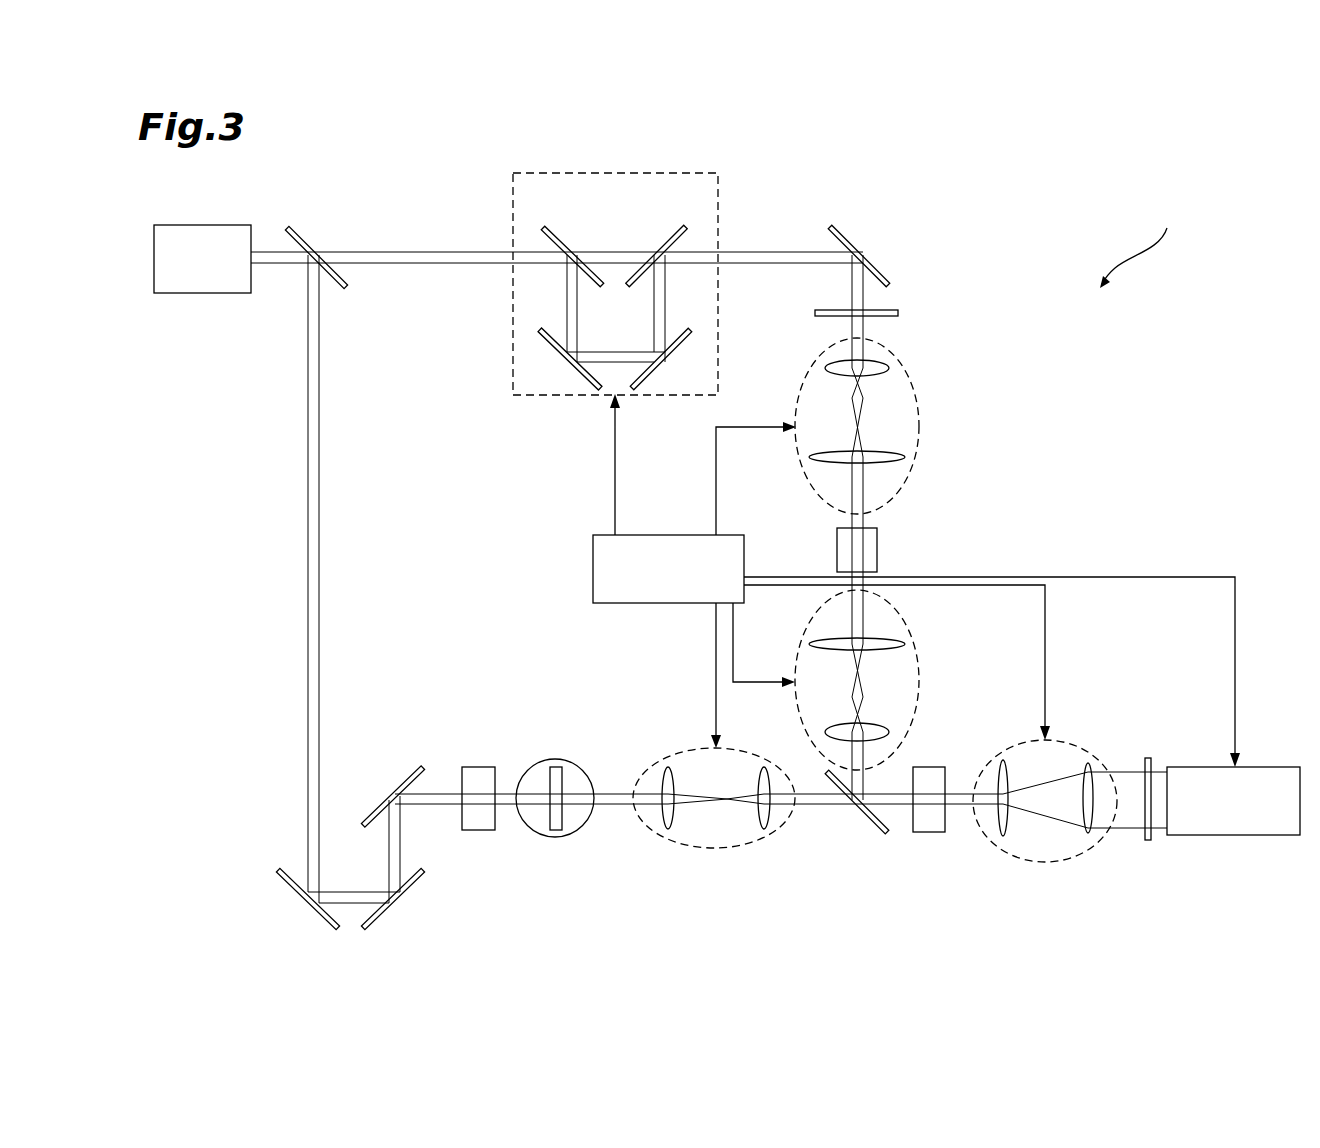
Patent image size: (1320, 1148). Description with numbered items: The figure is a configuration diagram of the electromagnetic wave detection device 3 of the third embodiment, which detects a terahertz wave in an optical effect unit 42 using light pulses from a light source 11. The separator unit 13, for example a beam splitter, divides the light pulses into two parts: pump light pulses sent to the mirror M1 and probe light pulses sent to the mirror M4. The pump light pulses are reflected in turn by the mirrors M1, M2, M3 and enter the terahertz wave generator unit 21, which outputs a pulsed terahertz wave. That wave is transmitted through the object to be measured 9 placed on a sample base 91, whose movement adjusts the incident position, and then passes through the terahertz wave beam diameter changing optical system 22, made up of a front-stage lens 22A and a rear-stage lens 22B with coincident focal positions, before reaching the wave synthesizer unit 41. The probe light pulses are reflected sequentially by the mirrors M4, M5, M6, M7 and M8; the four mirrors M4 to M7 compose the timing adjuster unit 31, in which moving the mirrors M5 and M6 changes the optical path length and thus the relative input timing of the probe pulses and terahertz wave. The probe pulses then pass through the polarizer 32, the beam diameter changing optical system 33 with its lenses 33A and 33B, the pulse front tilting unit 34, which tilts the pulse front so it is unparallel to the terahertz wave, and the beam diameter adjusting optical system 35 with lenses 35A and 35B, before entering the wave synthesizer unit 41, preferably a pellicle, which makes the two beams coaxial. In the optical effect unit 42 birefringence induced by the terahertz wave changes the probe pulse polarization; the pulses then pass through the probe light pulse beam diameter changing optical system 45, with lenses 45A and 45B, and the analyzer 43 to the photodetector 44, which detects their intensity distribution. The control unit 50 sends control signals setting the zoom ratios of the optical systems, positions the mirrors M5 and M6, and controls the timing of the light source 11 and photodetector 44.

The electromagnetic wave detection device 3 is at (1163, 224).
The light source 11 is at (200, 224).
The separator unit 13 is at (310, 248).
The timing adjuster unit 31 is at (720, 205).
The mirror M4 is at (566, 244).
The mirror M5 is at (552, 327).
The mirror M6 is at (682, 327).
The mirror M7 is at (668, 243).
The mirror M8 is at (850, 241).
The polarizer 32 is at (885, 310).
The beam diameter changing optical system 33 is at (800, 372).
The lens 33A is at (888, 362).
The lens 33B is at (885, 453).
The pulse front tilting unit 34 is at (878, 551).
The control unit 50 is at (592, 567).
The beam diameter adjusting optical system 35 is at (800, 628).
The lens 35A is at (885, 640).
The lens 35B is at (885, 726).
The mirror M1 is at (283, 867).
The mirror M2 is at (418, 867).
The mirror M3 is at (403, 770).
The terahertz wave generator unit 21 is at (478, 832).
The object to be measured 9 is at (556, 832).
The sample base 91 is at (586, 828).
The terahertz wave beam diameter changing optical system 22 is at (638, 820).
The lens 22A is at (669, 830).
The lens 22B is at (766, 830).
The wave synthesizer unit 41 is at (867, 826).
The optical effect unit 42 is at (928, 832).
The probe light pulse beam diameter changing optical system 45 is at (1106, 836).
The lens 45A is at (1004, 836).
The lens 45B is at (1087, 834).
The analyzer 43 is at (1150, 841).
The photodetector 44 is at (1233, 836).